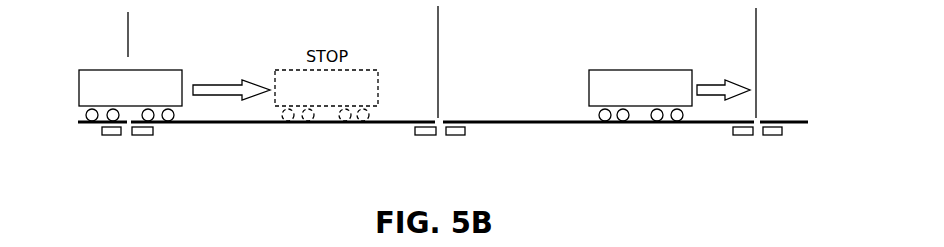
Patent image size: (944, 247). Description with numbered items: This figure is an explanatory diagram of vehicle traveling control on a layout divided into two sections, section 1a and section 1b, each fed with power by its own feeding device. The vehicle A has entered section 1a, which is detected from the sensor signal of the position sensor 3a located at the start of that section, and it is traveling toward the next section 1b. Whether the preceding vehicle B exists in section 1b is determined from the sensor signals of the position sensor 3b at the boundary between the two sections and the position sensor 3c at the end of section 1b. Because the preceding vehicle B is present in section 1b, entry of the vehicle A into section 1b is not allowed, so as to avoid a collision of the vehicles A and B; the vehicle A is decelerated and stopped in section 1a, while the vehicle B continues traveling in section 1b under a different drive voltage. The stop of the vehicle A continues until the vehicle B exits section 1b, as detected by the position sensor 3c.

The position sensor 3a is at (97, 139).
The position sensor 3b is at (470, 139).
The position sensor 3c is at (730, 139).
The section 1a is at (138, 18).
The section 1b is at (746, 18).
The vehicle A is at (130, 95).
The vehicle B is at (640, 95).